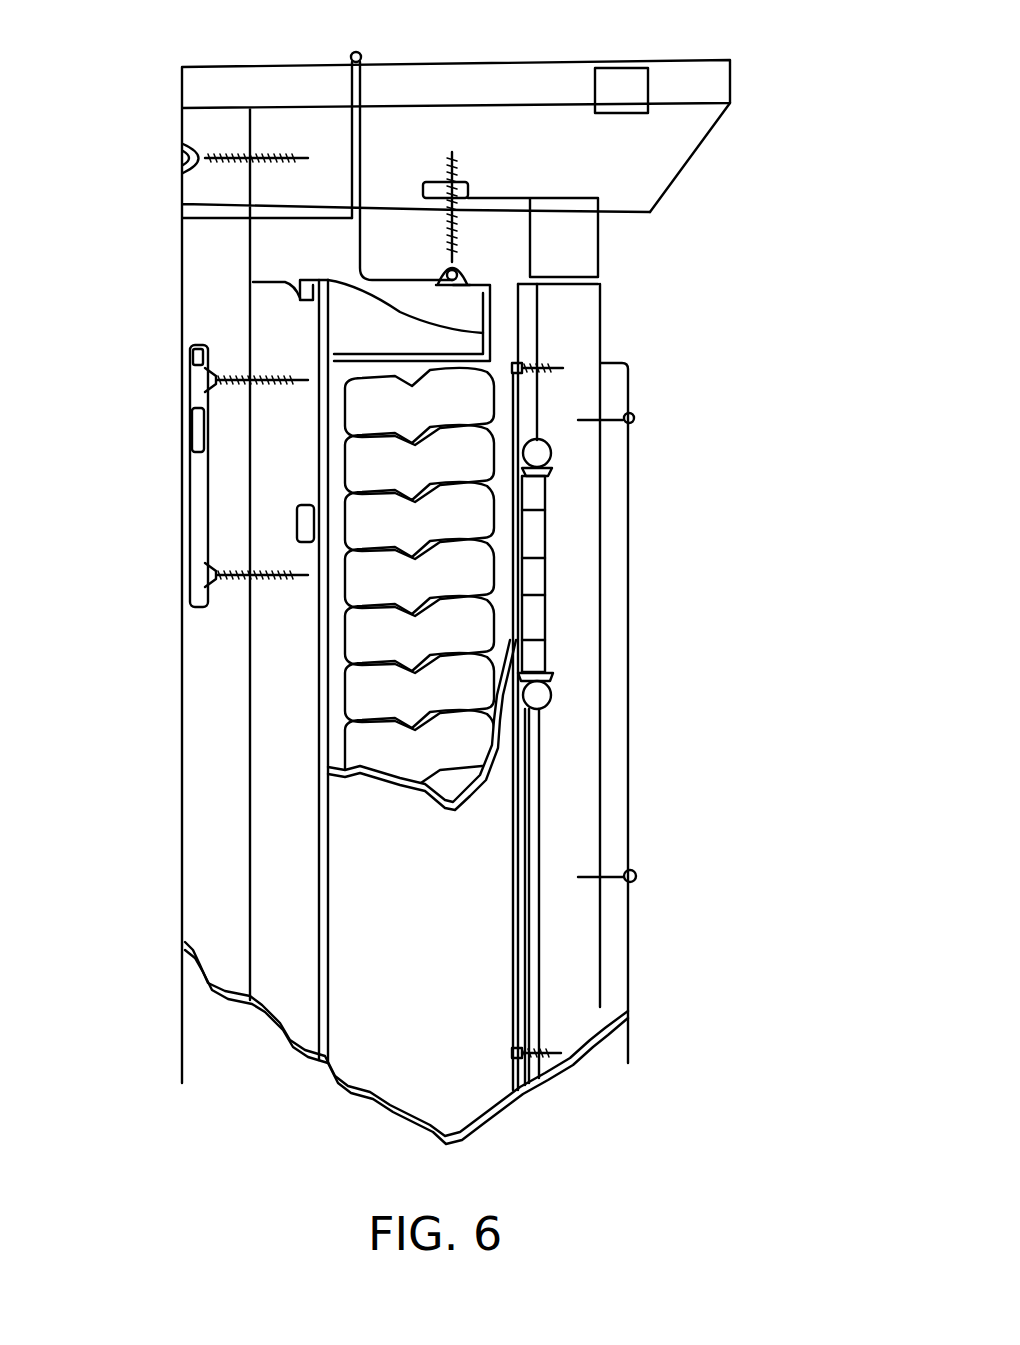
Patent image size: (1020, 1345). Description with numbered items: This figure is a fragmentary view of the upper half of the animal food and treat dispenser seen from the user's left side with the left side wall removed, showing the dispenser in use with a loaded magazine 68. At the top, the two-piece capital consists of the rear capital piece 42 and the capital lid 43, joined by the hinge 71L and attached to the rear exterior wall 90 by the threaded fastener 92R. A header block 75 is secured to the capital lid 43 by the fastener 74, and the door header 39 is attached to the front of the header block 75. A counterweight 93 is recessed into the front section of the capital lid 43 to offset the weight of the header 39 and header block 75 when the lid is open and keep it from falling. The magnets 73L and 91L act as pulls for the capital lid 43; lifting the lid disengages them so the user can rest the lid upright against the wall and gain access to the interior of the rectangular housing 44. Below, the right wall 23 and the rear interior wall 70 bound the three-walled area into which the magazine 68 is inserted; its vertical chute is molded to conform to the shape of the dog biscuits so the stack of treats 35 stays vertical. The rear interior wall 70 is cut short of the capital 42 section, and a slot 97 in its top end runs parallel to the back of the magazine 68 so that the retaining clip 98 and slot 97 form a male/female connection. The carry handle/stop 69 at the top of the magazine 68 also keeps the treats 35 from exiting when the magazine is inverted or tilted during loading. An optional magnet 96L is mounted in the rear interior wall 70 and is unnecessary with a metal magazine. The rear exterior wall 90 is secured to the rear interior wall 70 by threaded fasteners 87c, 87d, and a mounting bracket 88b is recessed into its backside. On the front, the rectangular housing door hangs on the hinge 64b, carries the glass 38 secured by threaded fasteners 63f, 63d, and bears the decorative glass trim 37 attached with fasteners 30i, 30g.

The rear capital piece 42 is at (182, 90).
The counterweight 93 is at (626, 68).
The capital lid 43 is at (706, 138).
The hinge 71L is at (351, 55).
The threaded fastener 92R is at (210, 168).
The header block 75 is at (390, 230).
The magnet 73L is at (470, 180).
The magnet 91L is at (492, 200).
The fastener 74 is at (455, 250).
The door header 39 is at (598, 257).
The retaining clip 98 is at (300, 280).
The slot 97 is at (300, 298).
The right wall 23 is at (502, 305).
The carry handle/stop 69 is at (397, 355).
The threaded fastener 63f is at (540, 362).
The treats 35 is at (357, 715).
The hinge 64b is at (546, 656).
The magazine 68 is at (482, 797).
The glass trim 37 is at (604, 528).
The fastener 30i is at (610, 424).
The fastener 30g is at (618, 881).
The glass 38 is at (525, 813).
The threaded fastener 63d is at (547, 1043).
The mounting bracket 88b is at (190, 468).
The threaded fastener 87d is at (236, 372).
The threaded fastener 87c is at (236, 586).
The magnet 96L is at (297, 525).
The rear interior wall 70 is at (262, 838).
The rectangular housing 44 is at (182, 858).
The rear exterior wall 90 is at (205, 912).